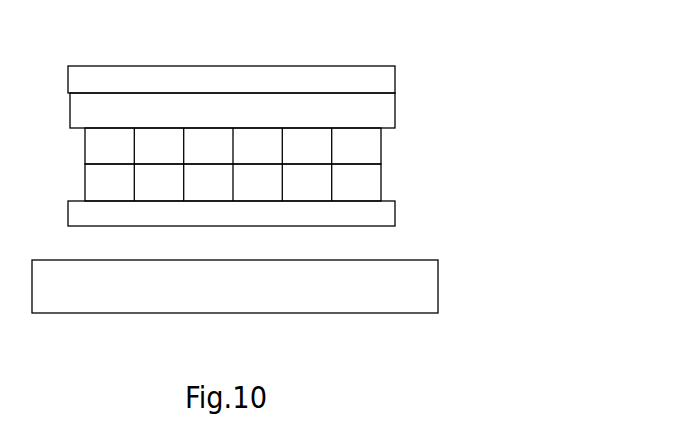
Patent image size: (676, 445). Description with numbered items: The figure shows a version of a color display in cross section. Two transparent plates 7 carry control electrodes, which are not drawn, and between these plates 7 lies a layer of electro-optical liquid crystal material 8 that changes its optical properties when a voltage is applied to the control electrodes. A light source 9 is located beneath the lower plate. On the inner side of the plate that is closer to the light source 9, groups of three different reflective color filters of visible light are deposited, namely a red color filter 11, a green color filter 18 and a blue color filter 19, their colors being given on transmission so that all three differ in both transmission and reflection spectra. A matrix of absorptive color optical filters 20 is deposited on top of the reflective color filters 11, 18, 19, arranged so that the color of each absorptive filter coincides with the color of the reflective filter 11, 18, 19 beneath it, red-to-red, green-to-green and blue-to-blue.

The transparent plate 7 is at (383, 82).
The layer of electro-optical liquid crystal material 8 is at (380, 117).
The matrix of absorptive color optical filters 20 is at (380, 150).
The red reflective color filter 11 is at (334, 170).
The green reflective color filter 18 is at (334, 170).
The blue reflective color filter 19 is at (380, 182).
The light source 9 is at (418, 301).